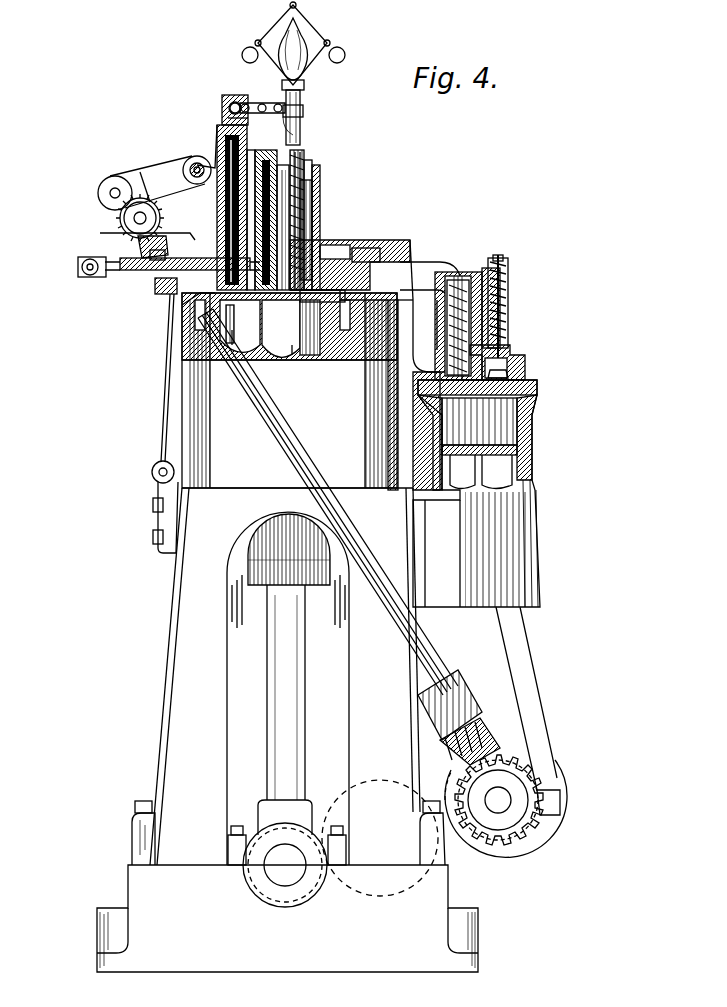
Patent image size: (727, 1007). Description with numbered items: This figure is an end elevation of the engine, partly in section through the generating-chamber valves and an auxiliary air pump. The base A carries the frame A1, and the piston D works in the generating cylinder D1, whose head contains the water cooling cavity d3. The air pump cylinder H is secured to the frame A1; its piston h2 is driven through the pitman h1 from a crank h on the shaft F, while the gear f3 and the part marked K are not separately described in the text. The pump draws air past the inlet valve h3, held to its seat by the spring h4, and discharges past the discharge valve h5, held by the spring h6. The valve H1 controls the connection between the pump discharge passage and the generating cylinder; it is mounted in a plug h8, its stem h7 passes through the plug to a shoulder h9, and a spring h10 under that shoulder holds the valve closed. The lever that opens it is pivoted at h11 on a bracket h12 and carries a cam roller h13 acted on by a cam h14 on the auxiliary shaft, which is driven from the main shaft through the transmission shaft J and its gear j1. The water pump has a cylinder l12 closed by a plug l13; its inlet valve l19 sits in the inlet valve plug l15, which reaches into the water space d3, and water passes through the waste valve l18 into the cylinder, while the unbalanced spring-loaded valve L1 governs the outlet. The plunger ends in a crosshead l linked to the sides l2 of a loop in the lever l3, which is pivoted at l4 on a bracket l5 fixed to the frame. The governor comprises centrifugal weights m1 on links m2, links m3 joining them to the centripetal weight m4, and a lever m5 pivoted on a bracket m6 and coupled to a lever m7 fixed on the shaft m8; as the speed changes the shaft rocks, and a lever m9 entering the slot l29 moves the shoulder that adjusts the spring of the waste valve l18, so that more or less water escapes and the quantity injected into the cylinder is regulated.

The base A is at (287, 876).
The frame A1 is at (285, 676).
The transmission shaft J is at (338, 514).
The cylinder K is at (290, 330).
The piston D is at (320, 340).
The generating cylinder D1 is at (458, 272).
The water cooling cavity d3 is at (368, 262).
The pump cylinder H is at (522, 525).
The valve H1 is at (330, 290).
The crank h is at (548, 808).
The pitman h1 is at (515, 650).
The piston h2 is at (185, 160).
The inlet valve h3 is at (505, 372).
The spring h4 is at (508, 300).
The discharge valve h5 is at (490, 270).
The spring h6 is at (462, 290).
The stem h7 is at (306, 230).
The plug h8 is at (318, 210).
The shoulder h9 is at (300, 160).
The spring h10 is at (310, 190).
The pivot h11 is at (197, 170).
The bracket h12 is at (160, 222).
The cam roller h13 is at (100, 190).
The cam h14 is at (138, 240).
The shaft F is at (498, 800).
The bevel gear f3 is at (525, 775).
The gear j1 is at (120, 262).
The crosshead l is at (88, 278).
The sides of loop l2 is at (150, 255).
The lever l3 is at (166, 380).
The pivot l4 is at (151, 472).
The bracket l5 is at (158, 520).
The cylinder of water pump l12 is at (235, 345).
The plug l13 is at (155, 288).
The inlet valve plug l15 is at (215, 125).
The waste valve l18 is at (190, 300).
The inlet valve l19 is at (230, 360).
The slot l29 is at (222, 105).
The valve L1 is at (285, 335).
The centrifugal weights m1 is at (358, 42).
The links m2 is at (332, 15).
The links m3 is at (304, 85).
The weight m4 is at (300, 40).
The lever m5 is at (300, 100).
The bracket m6 is at (303, 112).
The lever m7 is at (255, 103).
The shaft m8 is at (232, 103).
The lever m9 is at (230, 115).